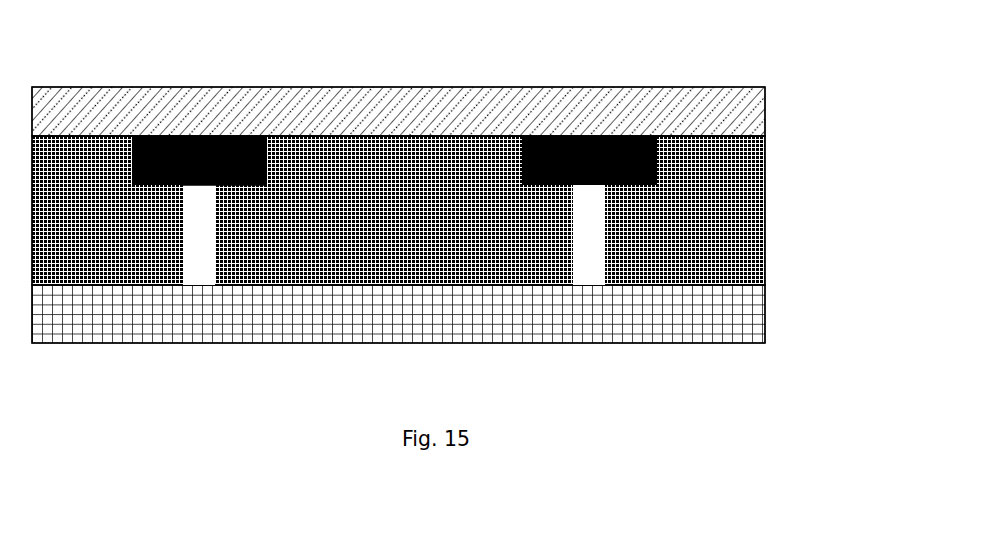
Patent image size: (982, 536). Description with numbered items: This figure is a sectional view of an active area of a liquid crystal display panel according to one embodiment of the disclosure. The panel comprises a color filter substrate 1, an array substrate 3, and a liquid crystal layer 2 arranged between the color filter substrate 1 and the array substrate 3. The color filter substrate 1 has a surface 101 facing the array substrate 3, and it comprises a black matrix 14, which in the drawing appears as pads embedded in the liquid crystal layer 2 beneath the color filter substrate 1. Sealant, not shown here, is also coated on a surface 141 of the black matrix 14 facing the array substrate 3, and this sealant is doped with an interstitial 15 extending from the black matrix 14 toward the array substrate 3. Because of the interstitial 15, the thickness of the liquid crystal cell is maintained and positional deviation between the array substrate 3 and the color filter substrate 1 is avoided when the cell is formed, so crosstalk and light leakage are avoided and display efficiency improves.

The color filter substrate 1 is at (767, 107).
The surface of the color filter substrate 101 is at (725, 130).
The liquid crystal layer 2 is at (765, 210).
The array substrate 3 is at (765, 313).
The black matrix 14 is at (305, 92).
The surface of the black matrix 141 is at (225, 192).
The interstitial 15 is at (394, 235).